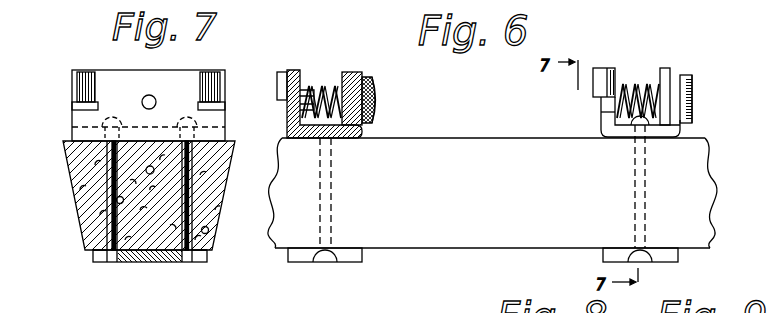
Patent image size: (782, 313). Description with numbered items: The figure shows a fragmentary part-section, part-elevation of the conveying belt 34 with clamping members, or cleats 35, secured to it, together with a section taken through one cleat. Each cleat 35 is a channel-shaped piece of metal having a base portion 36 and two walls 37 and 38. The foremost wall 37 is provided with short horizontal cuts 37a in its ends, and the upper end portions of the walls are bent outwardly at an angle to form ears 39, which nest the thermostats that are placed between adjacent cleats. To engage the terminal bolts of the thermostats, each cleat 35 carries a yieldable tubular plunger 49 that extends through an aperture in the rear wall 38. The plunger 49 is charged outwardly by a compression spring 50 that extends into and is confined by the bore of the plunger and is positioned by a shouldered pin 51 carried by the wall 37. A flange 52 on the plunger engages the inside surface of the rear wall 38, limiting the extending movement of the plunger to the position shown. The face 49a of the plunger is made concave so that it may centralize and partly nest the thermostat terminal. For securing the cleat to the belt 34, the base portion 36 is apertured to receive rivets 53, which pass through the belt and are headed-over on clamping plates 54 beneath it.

In FIG. 7, the belt 34 is at (85, 191).
In FIG. 6, the belt 34 is at (489, 150).
In FIG. 7, the cleat 35 is at (117, 69).
In FIG. 6, the cleat 35 is at (323, 66).
In FIG. 6, the base portion 36 is at (343, 140).
In FIG. 7, the wall 37 is at (162, 83).
In FIG. 6, the wall 37 is at (292, 70).
In FIG. 7, the horizontal cut 37a is at (80, 108).
In FIG. 6, the rear wall 38 is at (358, 72).
In FIG. 7, the ear 39 is at (72, 72).
In FIG. 6, the ear 39 is at (277, 80).
In FIG. 6, the tubular plunger 49 is at (370, 108).
In FIG. 6, the face 49a is at (374, 90).
In FIG. 6, the compression spring 50 is at (332, 82).
In FIG. 6, the shouldered pin 51 is at (284, 134).
In FIG. 6, the flange 52 is at (351, 72).
In FIG. 7, the rivet 53 is at (113, 216).
In FIG. 6, the rivet 53 is at (333, 193).
In FIG. 7, the clamping plate 54 is at (138, 263).
In FIG. 6, the clamping plate 54 is at (603, 253).